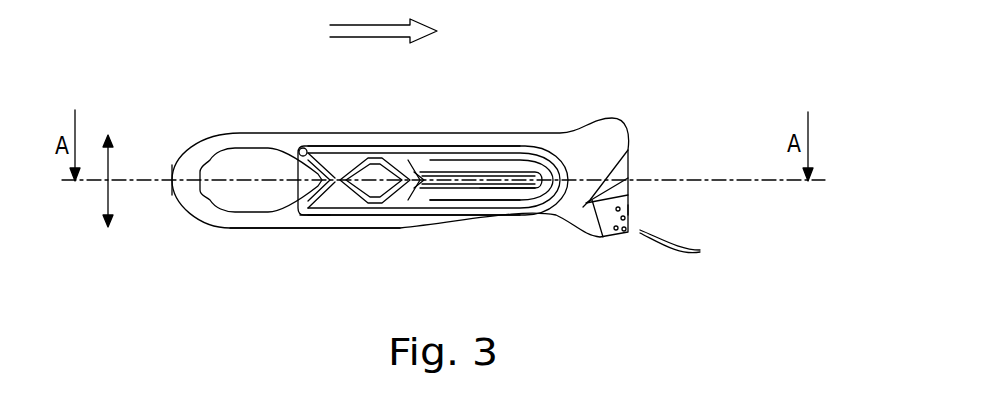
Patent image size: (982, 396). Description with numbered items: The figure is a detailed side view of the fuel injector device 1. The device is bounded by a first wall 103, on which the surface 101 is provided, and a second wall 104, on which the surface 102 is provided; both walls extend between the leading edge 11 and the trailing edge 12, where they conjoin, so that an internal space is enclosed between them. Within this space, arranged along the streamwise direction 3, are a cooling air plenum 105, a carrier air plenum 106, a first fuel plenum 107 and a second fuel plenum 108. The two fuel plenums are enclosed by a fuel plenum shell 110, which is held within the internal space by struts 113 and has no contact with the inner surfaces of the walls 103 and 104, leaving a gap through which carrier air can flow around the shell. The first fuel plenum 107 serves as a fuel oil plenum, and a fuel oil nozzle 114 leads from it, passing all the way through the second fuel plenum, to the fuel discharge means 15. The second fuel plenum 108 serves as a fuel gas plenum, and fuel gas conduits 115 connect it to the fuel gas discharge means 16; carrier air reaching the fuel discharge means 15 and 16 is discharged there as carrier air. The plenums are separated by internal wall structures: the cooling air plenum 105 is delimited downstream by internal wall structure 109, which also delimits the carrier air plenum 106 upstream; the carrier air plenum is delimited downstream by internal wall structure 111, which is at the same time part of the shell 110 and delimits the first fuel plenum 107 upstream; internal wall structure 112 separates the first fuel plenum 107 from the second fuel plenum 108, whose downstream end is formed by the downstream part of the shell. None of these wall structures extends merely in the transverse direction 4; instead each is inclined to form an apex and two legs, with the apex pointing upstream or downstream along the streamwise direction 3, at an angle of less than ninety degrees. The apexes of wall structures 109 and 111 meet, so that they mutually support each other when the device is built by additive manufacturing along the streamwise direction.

The fuel injector device 1 is at (187, 103).
The streamwise direction 3 is at (383, 21).
The transverse direction 4 is at (117, 177).
The leading edge 11 is at (172, 182).
The trailing edge 12 is at (630, 124).
The fuel discharge means 15 is at (632, 208).
The fuel gas discharge means 16 is at (685, 249).
The surface 101 is at (490, 146).
The surface 102 is at (408, 222).
The first wall 103 is at (396, 146).
The second wall 104 is at (280, 214).
The cooling air plenum 105 is at (238, 192).
The carrier air plenum 106 is at (323, 210).
The first fuel plenum 107 is at (372, 203).
The second fuel plenum 108 is at (452, 204).
The internal wall structure 109 is at (296, 143).
The fuel plenum shell 110 is at (426, 147).
The internal wall structure 111 is at (350, 150).
The internal wall structure 112 is at (404, 208).
The struts 113 is at (328, 150).
The fuel oil nozzle 114 is at (497, 200).
The fuel gas conduits 115 is at (542, 154).